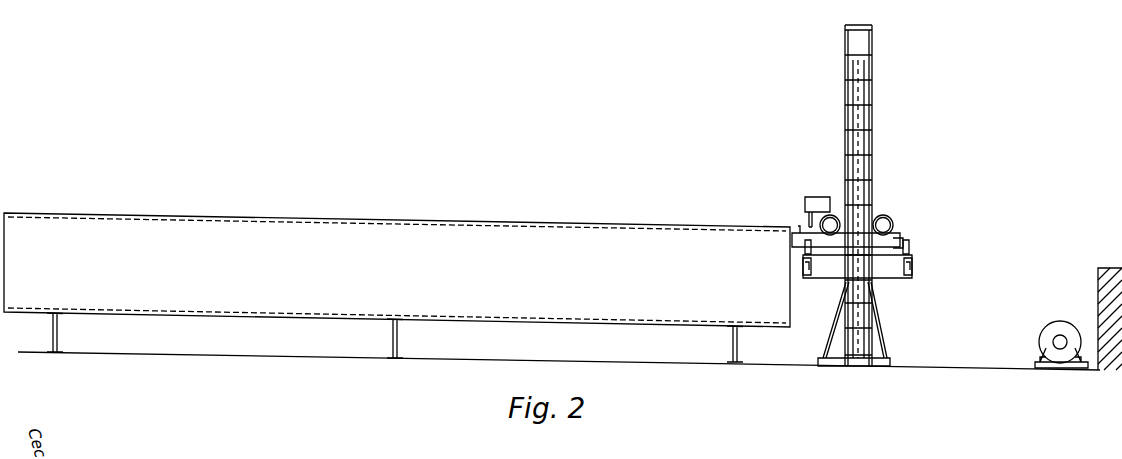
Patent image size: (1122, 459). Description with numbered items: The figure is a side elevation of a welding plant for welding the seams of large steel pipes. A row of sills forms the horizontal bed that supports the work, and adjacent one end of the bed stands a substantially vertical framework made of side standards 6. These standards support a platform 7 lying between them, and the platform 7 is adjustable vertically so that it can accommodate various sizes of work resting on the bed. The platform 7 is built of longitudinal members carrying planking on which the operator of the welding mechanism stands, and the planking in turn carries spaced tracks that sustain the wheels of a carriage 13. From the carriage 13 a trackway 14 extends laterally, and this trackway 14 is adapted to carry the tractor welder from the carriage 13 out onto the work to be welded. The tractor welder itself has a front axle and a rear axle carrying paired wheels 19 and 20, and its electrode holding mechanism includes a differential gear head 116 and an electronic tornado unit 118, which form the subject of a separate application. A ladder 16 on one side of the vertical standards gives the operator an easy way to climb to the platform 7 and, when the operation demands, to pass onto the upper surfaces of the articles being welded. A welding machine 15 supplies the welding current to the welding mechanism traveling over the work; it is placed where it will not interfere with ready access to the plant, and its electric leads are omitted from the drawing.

The side standards 6 is at (864, 74).
The platform 7 is at (891, 270).
The carriage 13 is at (897, 239).
The trackway 14 is at (792, 232).
The welding machine 15 is at (1057, 327).
The ladder 16 is at (874, 117).
The paired wheels 19 is at (830, 215).
The paired wheels 20 is at (887, 215).
The differential gear head 116 is at (810, 197).
The electronic tornado unit 118 is at (797, 232).